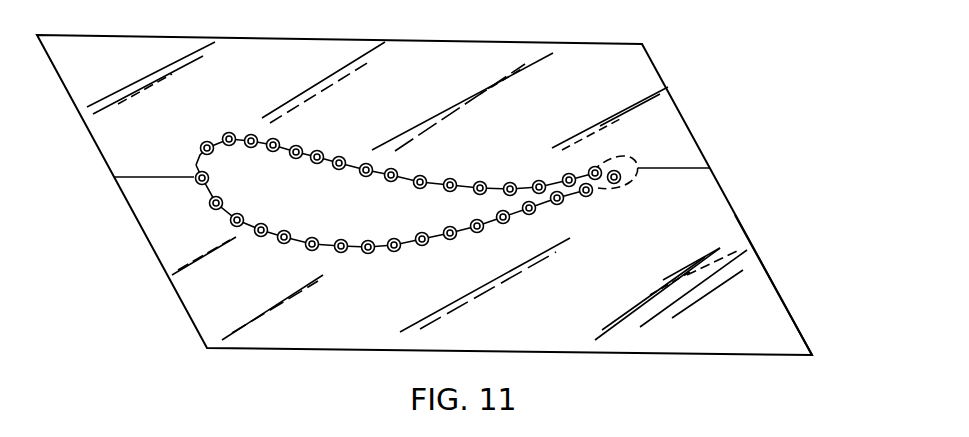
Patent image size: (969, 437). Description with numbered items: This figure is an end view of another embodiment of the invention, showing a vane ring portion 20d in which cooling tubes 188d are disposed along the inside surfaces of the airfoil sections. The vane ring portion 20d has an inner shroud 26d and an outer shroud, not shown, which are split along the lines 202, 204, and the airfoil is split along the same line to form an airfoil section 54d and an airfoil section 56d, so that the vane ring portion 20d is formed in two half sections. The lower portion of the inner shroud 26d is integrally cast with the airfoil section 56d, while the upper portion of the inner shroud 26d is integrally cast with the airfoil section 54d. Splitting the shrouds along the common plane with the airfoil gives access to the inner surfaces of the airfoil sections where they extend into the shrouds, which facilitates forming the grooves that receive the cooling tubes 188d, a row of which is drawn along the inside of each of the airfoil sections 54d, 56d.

The vane ring portion 20d is at (722, 90).
The airfoil section 54d is at (360, 158).
The airfoil section 56d is at (375, 252).
The cooling tubes 188d is at (253, 257).
The split line 202 is at (665, 168).
The split line 204 is at (165, 177).
The inner shroud 26d is at (765, 267).